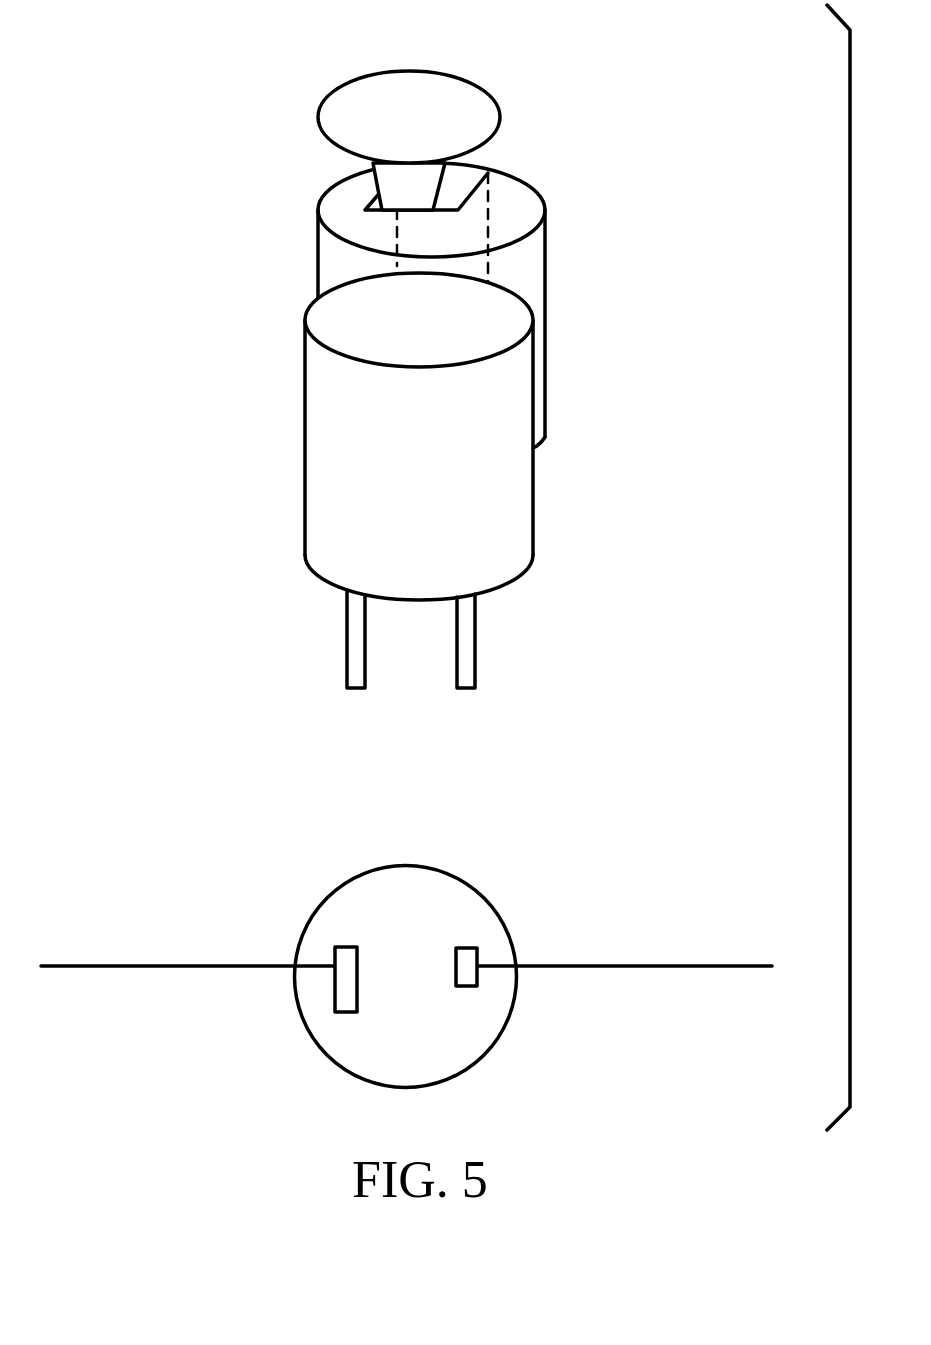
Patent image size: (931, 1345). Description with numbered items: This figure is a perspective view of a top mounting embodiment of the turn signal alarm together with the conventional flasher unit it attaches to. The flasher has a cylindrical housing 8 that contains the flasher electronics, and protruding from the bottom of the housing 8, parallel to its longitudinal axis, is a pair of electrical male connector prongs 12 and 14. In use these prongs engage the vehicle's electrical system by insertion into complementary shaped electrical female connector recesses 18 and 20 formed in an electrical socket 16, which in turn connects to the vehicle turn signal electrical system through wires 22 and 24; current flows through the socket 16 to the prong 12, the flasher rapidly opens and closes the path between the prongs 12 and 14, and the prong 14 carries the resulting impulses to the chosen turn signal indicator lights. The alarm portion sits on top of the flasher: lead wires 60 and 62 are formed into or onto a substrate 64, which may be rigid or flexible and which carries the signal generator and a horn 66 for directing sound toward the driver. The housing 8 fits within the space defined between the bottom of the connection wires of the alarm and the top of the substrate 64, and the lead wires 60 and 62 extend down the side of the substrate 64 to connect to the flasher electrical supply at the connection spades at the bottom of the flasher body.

The housing 8 is at (510, 507).
The electrical male connector prong 12 is at (475, 642).
The electrical male connector prong 14 is at (347, 637).
The electrical socket 16 is at (491, 943).
The electrical female connector recess 18 is at (342, 947).
The electrical female connector recess 20 is at (467, 986).
The wire 22 is at (193, 964).
The wire 24 is at (650, 966).
The lead wire 60 is at (488, 267).
The lead wire 62 is at (397, 262).
The substrate 64 is at (545, 335).
The horn 66 is at (455, 75).